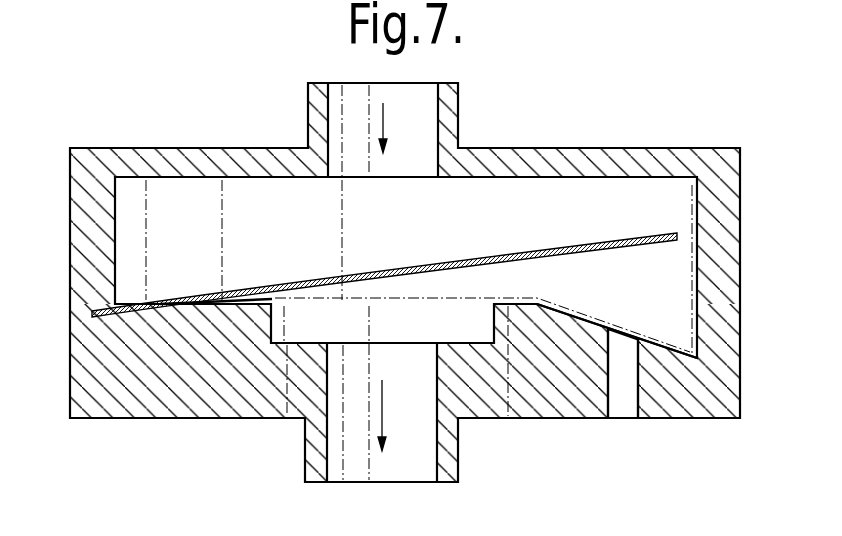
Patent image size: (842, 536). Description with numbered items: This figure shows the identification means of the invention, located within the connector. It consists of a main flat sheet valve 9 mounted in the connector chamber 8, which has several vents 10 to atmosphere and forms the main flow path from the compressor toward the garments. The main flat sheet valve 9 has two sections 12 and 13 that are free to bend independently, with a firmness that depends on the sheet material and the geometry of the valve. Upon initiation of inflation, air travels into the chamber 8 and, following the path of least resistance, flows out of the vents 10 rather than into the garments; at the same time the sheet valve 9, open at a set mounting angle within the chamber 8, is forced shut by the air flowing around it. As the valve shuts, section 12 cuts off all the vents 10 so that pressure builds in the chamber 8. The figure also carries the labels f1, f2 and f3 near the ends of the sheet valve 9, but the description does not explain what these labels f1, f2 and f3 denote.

The valve housing 8 is at (97, 200).
The flexible blade (valve member) 9 is at (385, 268).
The passages 10 is at (506, 388).
The seat of the blade 12 is at (309, 342).
The inclined seat portion 13 is at (622, 333).
The force f1 is at (102, 323).
The force f2 is at (186, 306).
The force f3 is at (687, 363).